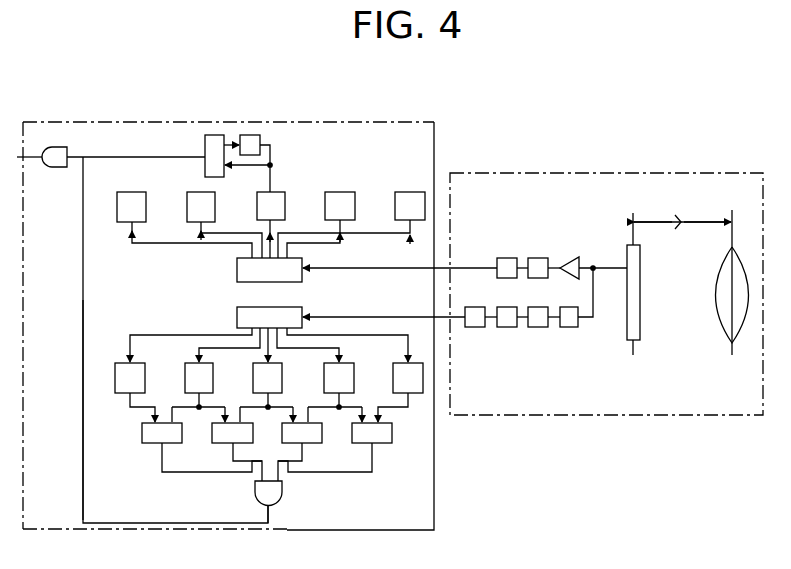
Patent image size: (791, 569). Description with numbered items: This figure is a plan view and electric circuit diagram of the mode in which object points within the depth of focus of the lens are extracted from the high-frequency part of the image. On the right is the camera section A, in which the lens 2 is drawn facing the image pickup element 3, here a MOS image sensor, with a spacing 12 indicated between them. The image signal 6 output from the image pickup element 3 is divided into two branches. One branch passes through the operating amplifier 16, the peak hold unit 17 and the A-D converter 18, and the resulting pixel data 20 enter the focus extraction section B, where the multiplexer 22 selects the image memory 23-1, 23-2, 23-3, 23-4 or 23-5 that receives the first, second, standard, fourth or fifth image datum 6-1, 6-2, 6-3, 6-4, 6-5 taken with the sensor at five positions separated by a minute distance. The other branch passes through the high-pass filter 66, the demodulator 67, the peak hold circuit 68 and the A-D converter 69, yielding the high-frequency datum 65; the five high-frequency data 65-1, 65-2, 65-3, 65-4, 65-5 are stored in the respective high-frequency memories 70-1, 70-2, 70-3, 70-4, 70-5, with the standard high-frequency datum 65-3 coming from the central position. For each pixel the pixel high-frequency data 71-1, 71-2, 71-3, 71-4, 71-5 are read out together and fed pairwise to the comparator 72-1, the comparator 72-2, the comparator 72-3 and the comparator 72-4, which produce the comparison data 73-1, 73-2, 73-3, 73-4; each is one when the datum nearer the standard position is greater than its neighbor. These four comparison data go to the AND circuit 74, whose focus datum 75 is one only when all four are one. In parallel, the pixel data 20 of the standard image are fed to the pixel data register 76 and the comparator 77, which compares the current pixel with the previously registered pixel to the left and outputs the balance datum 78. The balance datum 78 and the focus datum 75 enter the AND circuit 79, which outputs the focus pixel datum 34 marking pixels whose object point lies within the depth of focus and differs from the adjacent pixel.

The lens 2 is at (736, 255).
The image pickup element 3 is at (630, 245).
The image signal 6 is at (380, 268).
The distance 12 is at (678, 218).
The operating amplifier 16 is at (572, 262).
The peak hold unit 17 is at (538, 258).
The A-D converter 18 is at (508, 258).
The pixel data 20 is at (270, 147).
The multiplexer 22 is at (237, 270).
The image memory 23-1 is at (425, 198).
The image memory 23-2 is at (343, 195).
The image memory 23-3 is at (278, 195).
The image memory 23-4 is at (200, 203).
The image memory 23-5 is at (130, 200).
The focus pixel datum 34 is at (32, 162).
The first image datum 6-1 is at (412, 238).
The second image datum 6-2 is at (340, 240).
The standard image datum 6-3 is at (272, 236).
The fourth image datum 6-4 is at (200, 236).
The fifth image datum 6-5 is at (130, 240).
The high-frequency datum 65 is at (412, 317).
The high-frequency datum 65-1 is at (372, 342).
The high-frequency datum 65-2 is at (305, 318).
The standard high-frequency datum 65-3 is at (258, 340).
The high-frequency datum 65-4 is at (134, 352).
The high-frequency datum 65-5 is at (127, 352).
The high-pass filter 66 is at (569, 327).
The demodulator 67 is at (538, 327).
The peak hold circuit 68 is at (507, 327).
The A-D converter 69 is at (475, 327).
The high-frequency memory 70-1 is at (420, 377).
The high-frequency memory 70-2 is at (347, 383).
The high-frequency memory 70-3 is at (282, 378).
The high-frequency memory 70-4 is at (192, 380).
The high-frequency memory 70-5 is at (115, 378).
The pixel high-frequency datum 71-1 is at (405, 402).
The pixel high-frequency datum 71-2 is at (338, 410).
The pixel high-frequency datum 71-3 is at (268, 410).
The pixel high-frequency datum 71-4 is at (198, 410).
The pixel high-frequency datum 71-5 is at (130, 405).
The comparator 72-1 is at (392, 432).
The comparator 72-2 is at (297, 444).
The comparator 72-3 is at (233, 444).
The comparator 72-4 is at (142, 432).
The comparison datum 73-1 is at (372, 458).
The comparison datum 73-2 is at (278, 445).
The comparison datum 73-3 is at (252, 462).
The comparison datum 73-4 is at (162, 462).
The AND circuit 74 is at (267, 507).
The focus datum 75 is at (82, 497).
The pixel data register 76 is at (248, 142).
The comparator 77 is at (217, 142).
The balance datum 78 is at (83, 160).
The AND circuit 79 is at (52, 147).
The camera section A is at (590, 180).
The focus extraction section B is at (413, 133).